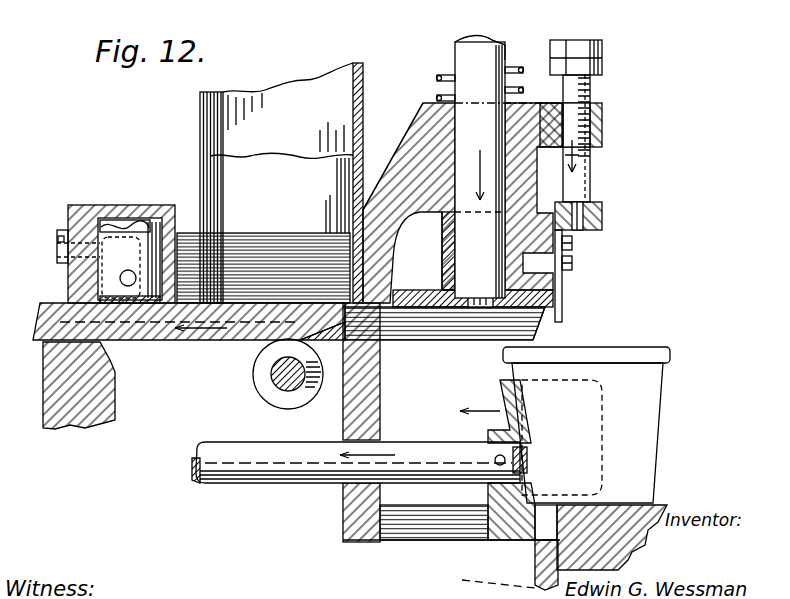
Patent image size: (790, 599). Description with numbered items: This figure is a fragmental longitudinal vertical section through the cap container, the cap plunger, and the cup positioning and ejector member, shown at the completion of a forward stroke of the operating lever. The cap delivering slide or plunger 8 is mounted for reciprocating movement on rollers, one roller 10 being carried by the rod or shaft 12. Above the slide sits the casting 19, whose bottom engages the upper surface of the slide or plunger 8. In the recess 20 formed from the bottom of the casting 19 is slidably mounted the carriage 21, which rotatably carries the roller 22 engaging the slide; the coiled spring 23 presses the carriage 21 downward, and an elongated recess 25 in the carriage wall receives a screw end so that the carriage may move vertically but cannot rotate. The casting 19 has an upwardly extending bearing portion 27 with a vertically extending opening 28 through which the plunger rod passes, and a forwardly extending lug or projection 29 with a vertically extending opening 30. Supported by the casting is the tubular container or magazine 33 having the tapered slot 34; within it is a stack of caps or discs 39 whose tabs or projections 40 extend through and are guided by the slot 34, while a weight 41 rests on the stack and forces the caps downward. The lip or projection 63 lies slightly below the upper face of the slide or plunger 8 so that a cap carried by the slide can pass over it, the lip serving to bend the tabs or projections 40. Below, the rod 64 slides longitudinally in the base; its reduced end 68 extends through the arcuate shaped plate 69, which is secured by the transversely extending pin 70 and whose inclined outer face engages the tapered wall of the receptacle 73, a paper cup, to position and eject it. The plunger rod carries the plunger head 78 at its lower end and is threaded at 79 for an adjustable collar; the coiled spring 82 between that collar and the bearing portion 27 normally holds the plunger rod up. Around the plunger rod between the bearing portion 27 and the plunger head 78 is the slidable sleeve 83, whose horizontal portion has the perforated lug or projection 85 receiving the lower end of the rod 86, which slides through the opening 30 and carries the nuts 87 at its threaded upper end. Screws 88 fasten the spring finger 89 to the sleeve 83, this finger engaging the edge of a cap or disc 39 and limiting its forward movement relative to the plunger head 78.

The cap delivering slide or plunger 8 is at (209, 340).
The roller 10 is at (317, 398).
The rod or shaft 12 is at (283, 386).
The casting 19 is at (366, 207).
The recess 20 is at (108, 215).
The carriage 21 is at (126, 226).
The roller 22 is at (128, 305).
The coiled spring 23 is at (148, 226).
The elongated recess 25 is at (78, 272).
The upwardly extending bearing portion 27 is at (429, 108).
The vertically extending opening 28 is at (456, 150).
The lug or projection 29 is at (603, 133).
The vertically extending opening 30 is at (590, 120).
The container or magazine 33 is at (364, 118).
The tapered slot 34 is at (202, 139).
The caps or discs 39 is at (452, 343).
The tab or projection 40 is at (203, 257).
The weight 41 is at (281, 148).
The lip or projection 63 is at (393, 303).
The rod 64 is at (317, 486).
The reduced end 68 is at (528, 458).
The arcuate shaped plate 69 is at (500, 391).
The transversely extending pin 70 is at (495, 460).
The receptacle 73 is at (647, 451).
The plunger head 78 is at (552, 328).
The threaded portion 79 is at (494, 57).
The coiled spring 82 is at (474, 71).
The sleeve 83 is at (442, 230).
The perforated lug or projection 85 is at (603, 215).
The rod 86 is at (591, 167).
The nuts 87 is at (611, 44).
The screws 88 is at (573, 249).
The spring finger 89 is at (566, 310).